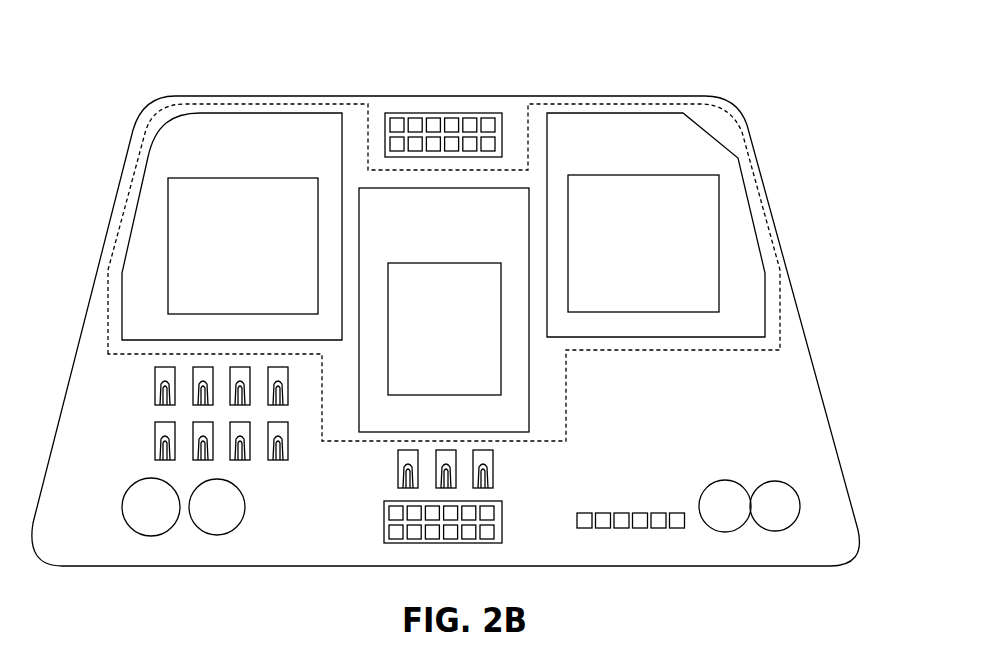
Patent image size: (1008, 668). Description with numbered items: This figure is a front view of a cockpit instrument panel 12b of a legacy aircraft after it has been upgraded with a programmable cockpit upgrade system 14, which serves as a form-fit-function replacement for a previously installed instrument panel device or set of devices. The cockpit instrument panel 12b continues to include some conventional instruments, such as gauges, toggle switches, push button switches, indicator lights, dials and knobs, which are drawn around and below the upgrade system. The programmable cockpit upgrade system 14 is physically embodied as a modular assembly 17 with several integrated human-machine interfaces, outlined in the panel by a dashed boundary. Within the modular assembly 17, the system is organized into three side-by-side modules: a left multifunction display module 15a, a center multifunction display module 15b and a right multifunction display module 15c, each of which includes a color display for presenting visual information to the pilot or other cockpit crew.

The programmable cockpit upgrade system 14 is at (672, 375).
The modular assembly 17 is at (780, 337).
The left multifunction display module 15a is at (257, 155).
The center multifunction display module 15b is at (510, 397).
The right multifunction display module 15c is at (642, 145).
The cockpit instrument panel 12b is at (513, 115).